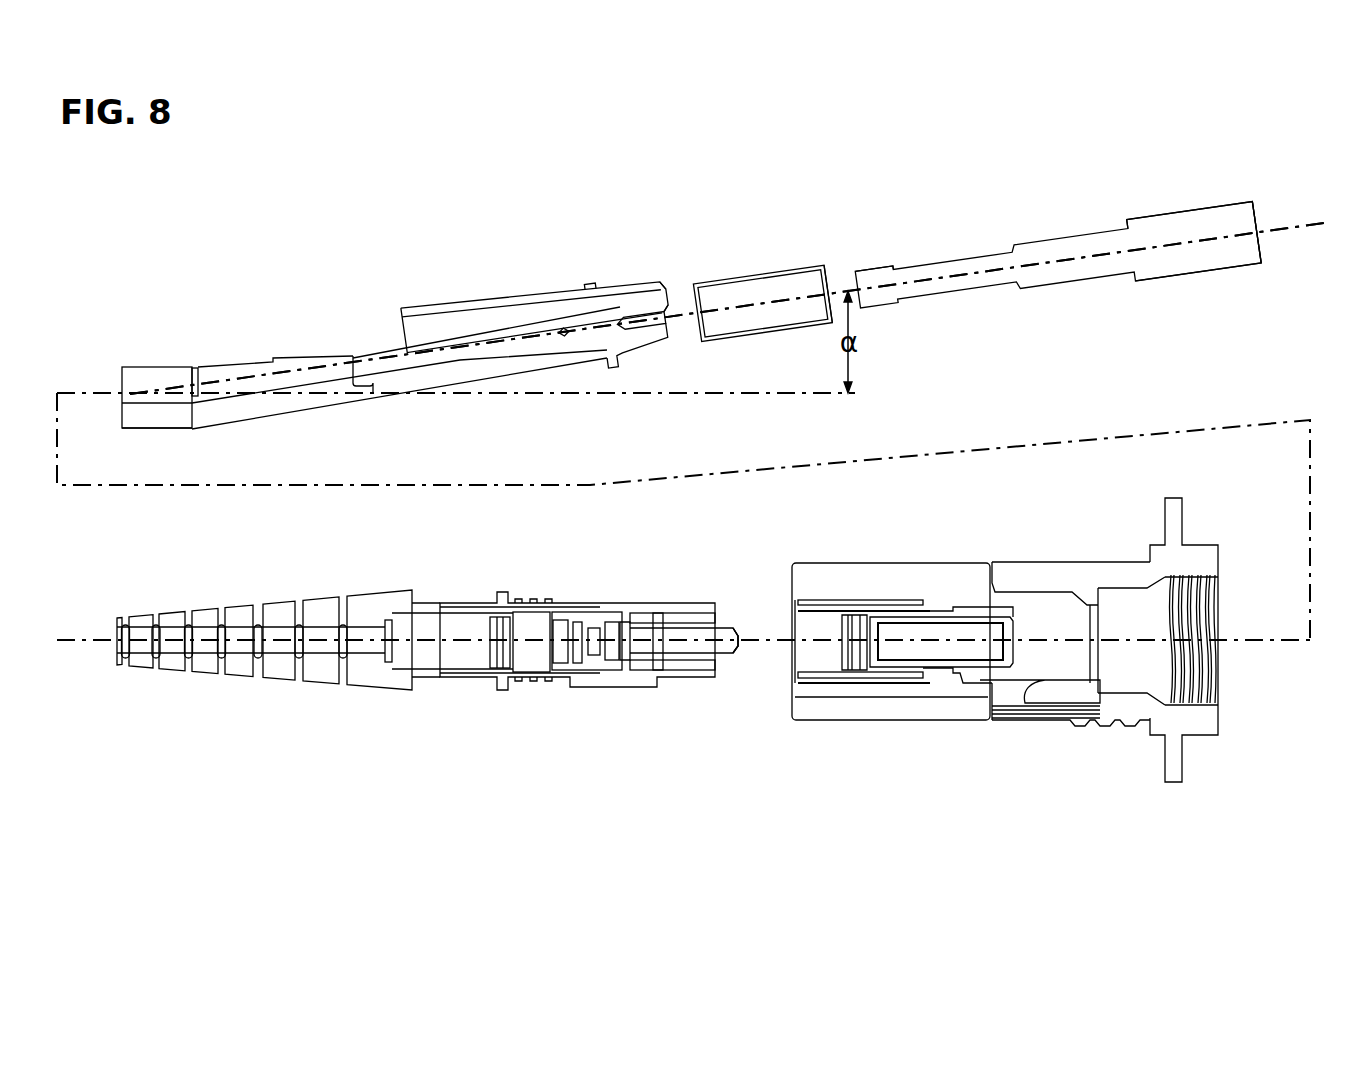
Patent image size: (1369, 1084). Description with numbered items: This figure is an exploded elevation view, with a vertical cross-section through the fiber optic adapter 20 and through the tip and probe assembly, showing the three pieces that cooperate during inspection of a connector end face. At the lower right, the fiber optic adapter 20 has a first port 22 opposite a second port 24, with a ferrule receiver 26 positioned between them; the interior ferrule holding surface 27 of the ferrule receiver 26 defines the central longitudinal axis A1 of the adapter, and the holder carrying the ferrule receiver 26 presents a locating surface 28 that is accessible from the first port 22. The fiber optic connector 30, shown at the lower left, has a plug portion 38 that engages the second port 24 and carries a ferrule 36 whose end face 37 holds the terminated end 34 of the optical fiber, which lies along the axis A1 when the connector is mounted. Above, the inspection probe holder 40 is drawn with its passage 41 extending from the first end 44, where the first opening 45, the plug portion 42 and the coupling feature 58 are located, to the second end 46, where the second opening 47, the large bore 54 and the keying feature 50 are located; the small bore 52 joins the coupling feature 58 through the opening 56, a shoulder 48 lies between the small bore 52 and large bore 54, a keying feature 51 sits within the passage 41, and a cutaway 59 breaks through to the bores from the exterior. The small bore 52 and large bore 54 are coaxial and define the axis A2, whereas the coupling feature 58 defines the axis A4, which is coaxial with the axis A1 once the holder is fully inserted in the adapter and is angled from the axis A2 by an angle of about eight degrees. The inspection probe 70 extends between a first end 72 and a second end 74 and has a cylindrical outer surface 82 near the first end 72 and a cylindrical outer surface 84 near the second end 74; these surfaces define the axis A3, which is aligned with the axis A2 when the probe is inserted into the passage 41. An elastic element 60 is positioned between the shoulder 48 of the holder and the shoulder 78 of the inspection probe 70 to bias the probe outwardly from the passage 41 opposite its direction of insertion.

The fiber optic adapter 20 is at (1016, 725).
The first port 22 is at (1220, 676).
The second port 24 is at (805, 658).
The ferrule receiver 26 is at (902, 652).
The interior ferrule holding surface 27 is at (927, 652).
The locating surface 28 is at (977, 612).
The fiber optic connector 30 is at (386, 703).
The terminated end 34 is at (738, 640).
The ferrule 36 is at (729, 657).
The end face 37 is at (738, 640).
The plug portion 38 is at (673, 679).
The inspection probe holder 40 is at (530, 273).
The passage 41 is at (470, 362).
The plug portion 42 is at (150, 432).
The first end 44 is at (122, 415).
The first opening 45 is at (132, 403).
The second end 46 is at (665, 240).
The second opening 47 is at (705, 269).
The shoulder 48 is at (362, 388).
The keying feature 50 is at (668, 350).
The keying feature 51 is at (550, 392).
The small bore 52 is at (225, 373).
The large bore 54 is at (584, 268).
The opening 56 is at (197, 376).
The coupling feature 58 is at (127, 380).
The cutaway 59 is at (350, 356).
The elastic element 60 is at (756, 258).
The inspection probe 70 is at (1061, 292).
The first end 72 is at (841, 260).
The second end 74 is at (1305, 247).
The shoulder 78 is at (1108, 188).
The cylindrical outer surface 82 is at (893, 240).
The cylindrical outer surface 84 is at (1187, 197).
The central longitudinal axis A1 is at (1254, 637).
The axis A2 is at (1320, 221).
The axis A3 is at (1320, 221).
The axis A4 is at (668, 396).